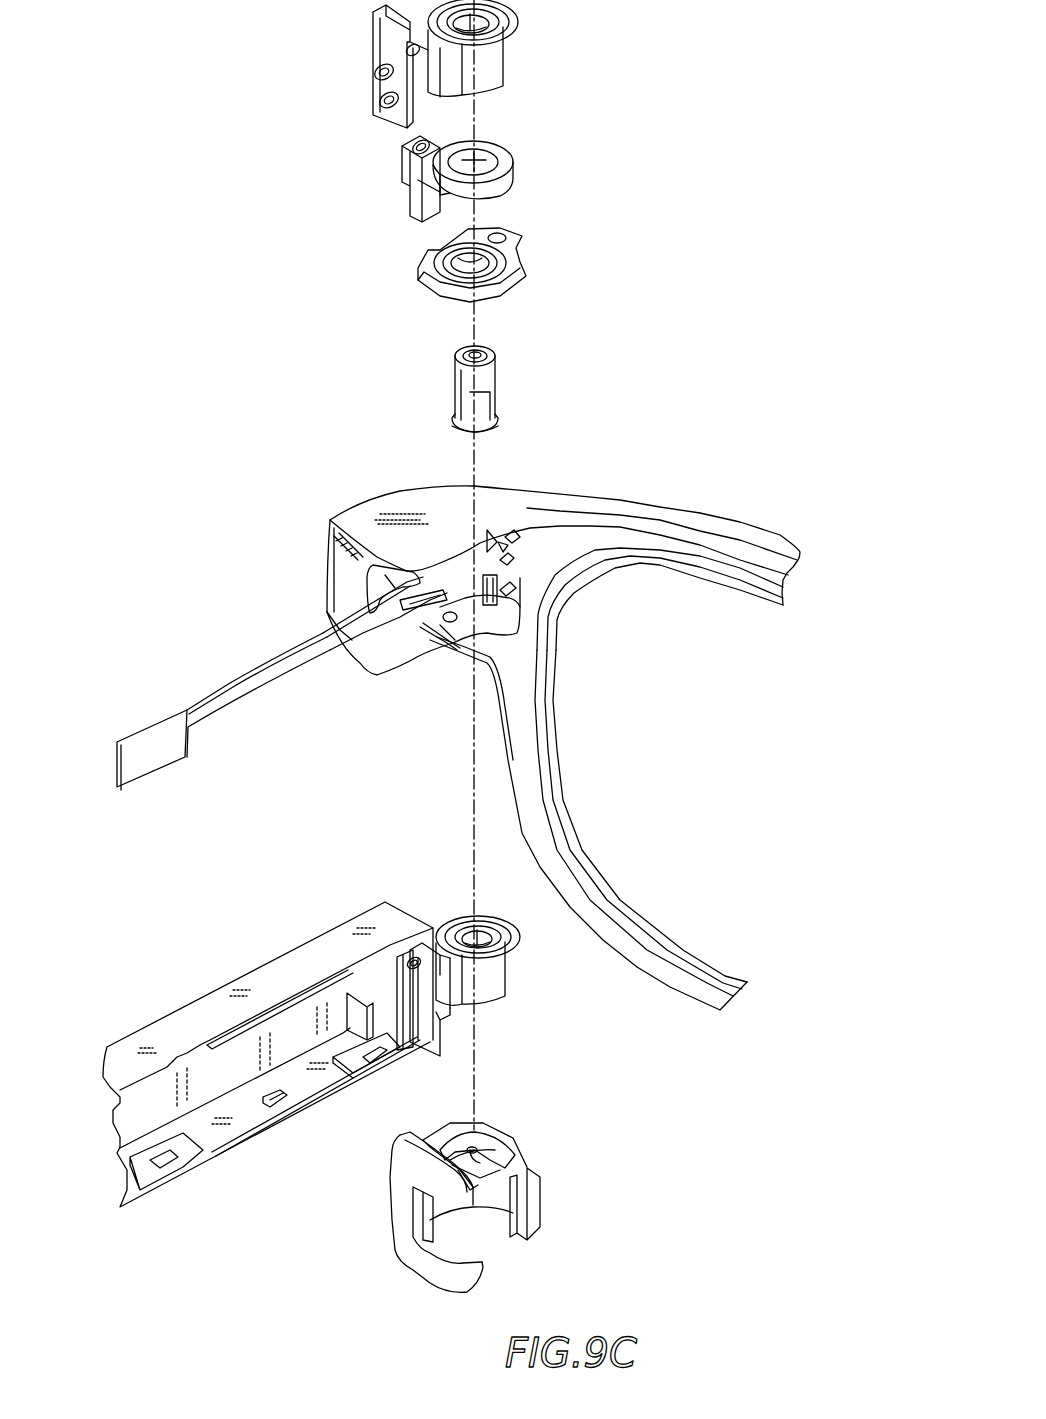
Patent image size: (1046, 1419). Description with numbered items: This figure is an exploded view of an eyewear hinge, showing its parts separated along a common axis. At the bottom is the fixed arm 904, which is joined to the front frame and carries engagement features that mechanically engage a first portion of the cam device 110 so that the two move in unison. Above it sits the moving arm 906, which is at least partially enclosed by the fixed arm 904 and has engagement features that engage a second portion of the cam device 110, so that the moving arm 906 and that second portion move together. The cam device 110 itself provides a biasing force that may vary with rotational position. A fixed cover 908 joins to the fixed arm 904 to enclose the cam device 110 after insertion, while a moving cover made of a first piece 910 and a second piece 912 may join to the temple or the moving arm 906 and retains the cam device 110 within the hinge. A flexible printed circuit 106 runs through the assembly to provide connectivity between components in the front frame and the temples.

The second piece 912 is at (378, 38).
The first piece 910 is at (420, 193).
The fixed cover 908 is at (420, 267).
The cam device 110 is at (452, 388).
The flexible printed circuit 106 is at (232, 692).
The moving arm 906 is at (490, 980).
The fixed arm 904 is at (420, 1267).